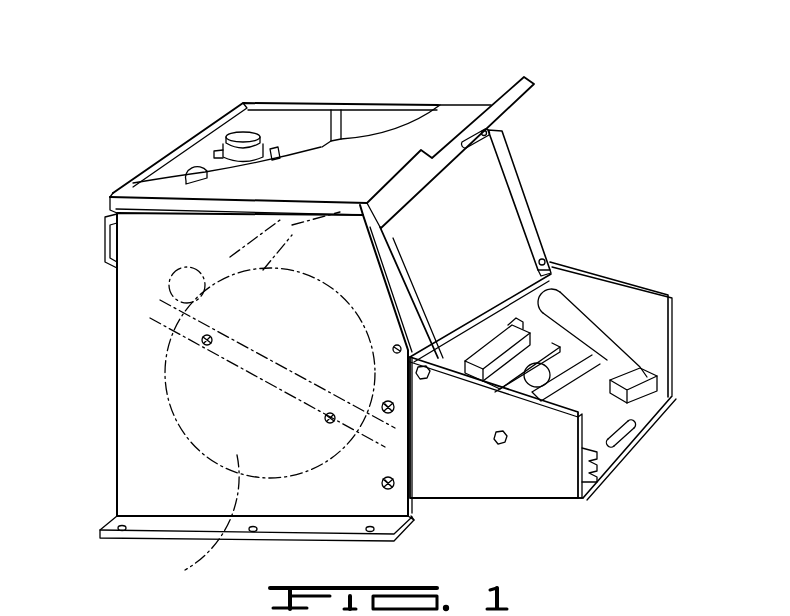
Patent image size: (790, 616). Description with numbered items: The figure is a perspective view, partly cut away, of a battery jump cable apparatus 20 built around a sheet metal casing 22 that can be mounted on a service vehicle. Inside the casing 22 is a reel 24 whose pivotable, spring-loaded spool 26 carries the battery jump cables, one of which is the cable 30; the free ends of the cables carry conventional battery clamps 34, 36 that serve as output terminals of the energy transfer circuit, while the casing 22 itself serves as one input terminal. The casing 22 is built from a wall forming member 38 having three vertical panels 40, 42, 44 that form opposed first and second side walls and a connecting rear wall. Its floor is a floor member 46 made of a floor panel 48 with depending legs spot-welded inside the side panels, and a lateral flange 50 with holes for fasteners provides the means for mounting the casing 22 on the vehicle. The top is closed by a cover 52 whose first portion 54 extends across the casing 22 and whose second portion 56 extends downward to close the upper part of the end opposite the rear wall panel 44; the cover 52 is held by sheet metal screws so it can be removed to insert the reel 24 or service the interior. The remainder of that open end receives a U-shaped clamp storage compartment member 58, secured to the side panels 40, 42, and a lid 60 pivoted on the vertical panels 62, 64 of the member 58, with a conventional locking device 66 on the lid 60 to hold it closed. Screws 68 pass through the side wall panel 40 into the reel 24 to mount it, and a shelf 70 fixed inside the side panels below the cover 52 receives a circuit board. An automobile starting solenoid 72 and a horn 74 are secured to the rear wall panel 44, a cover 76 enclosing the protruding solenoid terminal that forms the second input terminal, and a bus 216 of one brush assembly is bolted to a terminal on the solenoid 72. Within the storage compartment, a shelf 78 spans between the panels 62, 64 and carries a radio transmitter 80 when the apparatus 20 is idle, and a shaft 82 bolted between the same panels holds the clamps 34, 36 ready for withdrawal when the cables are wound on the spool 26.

The battery jump cable apparatus 20 is at (490, 73).
The casing 22 is at (238, 359).
The reel 24 is at (170, 369).
The spool 26 is at (182, 573).
The battery jump cable 30 is at (530, 362).
The battery clamp 34 is at (600, 478).
The battery clamp 36 is at (641, 371).
The wall forming member 38 is at (284, 100).
The side wall panel 40 is at (134, 447).
The side wall panel 42 is at (306, 115).
The rear wall panel 44 is at (205, 147).
The floor member 46 is at (405, 530).
The floor panel 48 is at (510, 460).
The flange 50 is at (287, 527).
The cover 52 is at (459, 104).
The first portion of cover 54 is at (269, 188).
The second portion of cover 56 is at (383, 197).
The clamp storage compartment member 58 is at (556, 483).
The lid 60 is at (500, 214).
The vertical panel 62 is at (507, 480).
The vertical panel 64 is at (650, 302).
The locking device 66 is at (492, 134).
The screws 68 is at (210, 335).
The shelf 70 is at (370, 120).
The automobile starting solenoid 72 is at (240, 131).
The horn 74 is at (184, 170).
The cover 76 is at (106, 238).
The shelf 78 is at (510, 383).
The radio transmitter 80 is at (498, 330).
The shaft 82 is at (577, 372).
The bus 216 is at (290, 128).